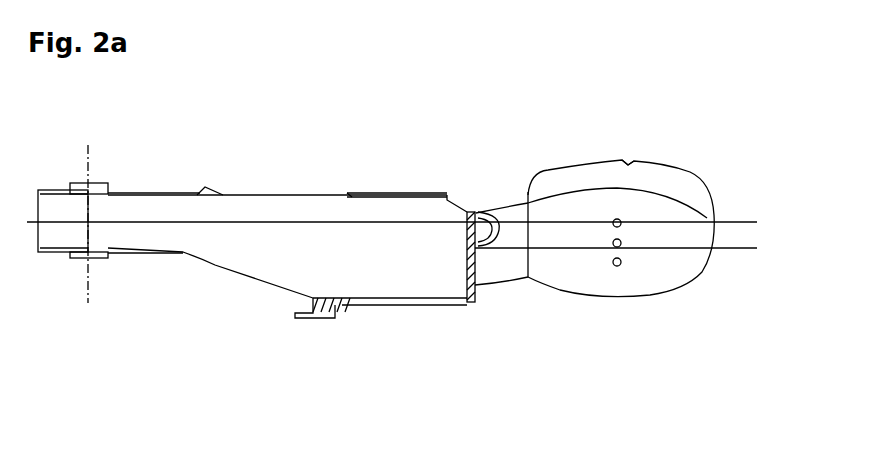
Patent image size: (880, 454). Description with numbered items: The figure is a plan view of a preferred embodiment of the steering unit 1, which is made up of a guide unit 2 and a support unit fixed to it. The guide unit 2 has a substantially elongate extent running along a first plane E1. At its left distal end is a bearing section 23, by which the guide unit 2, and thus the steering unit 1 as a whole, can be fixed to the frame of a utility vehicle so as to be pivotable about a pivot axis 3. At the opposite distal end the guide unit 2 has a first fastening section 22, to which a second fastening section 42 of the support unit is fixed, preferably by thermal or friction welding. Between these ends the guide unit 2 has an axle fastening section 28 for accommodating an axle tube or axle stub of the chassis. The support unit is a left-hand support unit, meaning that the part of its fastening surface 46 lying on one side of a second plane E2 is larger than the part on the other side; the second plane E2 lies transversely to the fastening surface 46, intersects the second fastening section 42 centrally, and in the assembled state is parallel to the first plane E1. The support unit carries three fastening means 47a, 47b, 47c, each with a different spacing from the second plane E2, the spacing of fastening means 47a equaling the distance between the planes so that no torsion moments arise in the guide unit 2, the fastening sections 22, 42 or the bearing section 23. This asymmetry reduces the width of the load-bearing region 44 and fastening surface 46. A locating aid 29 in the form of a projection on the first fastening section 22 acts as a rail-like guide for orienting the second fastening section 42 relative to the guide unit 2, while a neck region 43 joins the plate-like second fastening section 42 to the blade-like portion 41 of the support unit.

The steering unit 1 is at (312, 167).
The guide unit 2 is at (362, 307).
The longitudinal axis 3 is at (88, 183).
The first fastening section 22 is at (463, 273).
The bearing section 23 is at (77, 258).
The axle fastening section 28 is at (442, 187).
The locating aid 29 is at (492, 212).
The second fastening section 42 is at (487, 282).
The neck 43 is at (502, 173).
The blade 41 is at (677, 290).
The load-bearing region 44 is at (630, 162).
The fastening surface 46 is at (590, 233).
The fastening means 47a is at (614, 227).
The fastening means 47b is at (616, 247).
The fastening means 47c is at (618, 266).
The first plane E1 is at (745, 218).
The second plane E2 is at (733, 249).